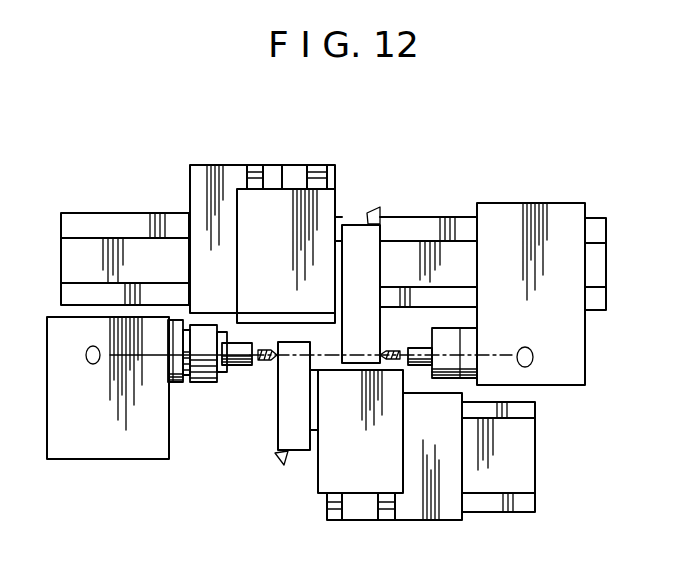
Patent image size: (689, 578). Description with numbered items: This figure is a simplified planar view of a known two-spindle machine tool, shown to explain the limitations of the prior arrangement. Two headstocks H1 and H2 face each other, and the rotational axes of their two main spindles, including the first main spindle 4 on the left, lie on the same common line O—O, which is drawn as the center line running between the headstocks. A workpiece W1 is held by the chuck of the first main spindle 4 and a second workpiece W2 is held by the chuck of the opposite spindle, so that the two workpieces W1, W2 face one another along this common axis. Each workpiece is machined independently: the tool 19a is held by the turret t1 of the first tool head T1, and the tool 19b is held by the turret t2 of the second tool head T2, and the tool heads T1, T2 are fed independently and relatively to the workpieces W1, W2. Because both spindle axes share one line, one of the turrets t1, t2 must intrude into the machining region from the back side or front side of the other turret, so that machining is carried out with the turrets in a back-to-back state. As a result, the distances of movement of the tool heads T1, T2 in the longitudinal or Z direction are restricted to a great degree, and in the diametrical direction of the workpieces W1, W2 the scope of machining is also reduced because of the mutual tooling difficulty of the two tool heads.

The first headstock H1 is at (62, 402).
The second headstock H2 is at (558, 351).
The first tool head T1 is at (285, 208).
The second tool head T2 is at (330, 468).
The turret t1 is at (365, 267).
The turret t2 is at (273, 442).
The workpiece W1 is at (233, 366).
The workpiece W2 is at (413, 364).
The tool 19a is at (262, 364).
The tool 19b is at (385, 351).
The first main spindle 4 is at (175, 383).